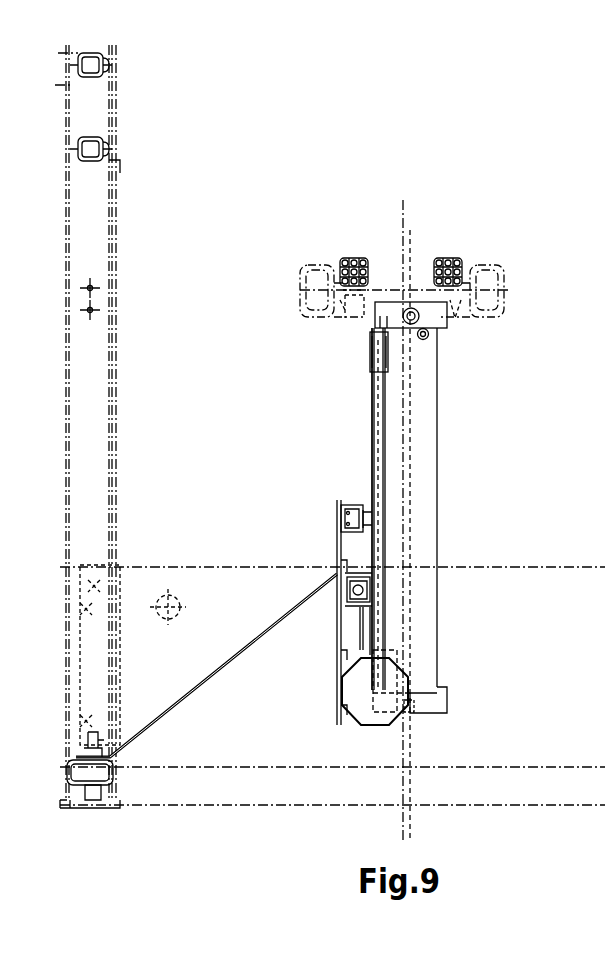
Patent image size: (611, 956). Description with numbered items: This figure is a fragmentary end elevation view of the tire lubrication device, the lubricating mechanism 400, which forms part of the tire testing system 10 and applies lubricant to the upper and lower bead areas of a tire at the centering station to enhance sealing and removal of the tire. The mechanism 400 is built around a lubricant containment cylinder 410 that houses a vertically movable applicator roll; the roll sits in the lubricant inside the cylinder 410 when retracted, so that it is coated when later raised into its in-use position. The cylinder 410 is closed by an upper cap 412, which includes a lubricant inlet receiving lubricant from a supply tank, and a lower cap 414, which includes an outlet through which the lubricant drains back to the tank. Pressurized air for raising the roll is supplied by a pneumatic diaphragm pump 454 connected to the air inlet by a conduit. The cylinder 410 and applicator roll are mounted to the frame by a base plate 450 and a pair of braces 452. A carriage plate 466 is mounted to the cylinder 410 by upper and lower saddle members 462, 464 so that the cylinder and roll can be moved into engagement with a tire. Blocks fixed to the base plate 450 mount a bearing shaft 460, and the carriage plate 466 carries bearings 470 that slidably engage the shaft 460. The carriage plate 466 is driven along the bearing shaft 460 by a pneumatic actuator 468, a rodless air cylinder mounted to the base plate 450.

The section line 10 is at (570, 217).
The lubricating mechanism 400 is at (315, 218).
The lubricant containment cylinder 410 is at (438, 395).
The upper cap 412 is at (437, 315).
The lower cap 414 is at (445, 700).
The base plate 450 is at (340, 525).
The braces 452 is at (220, 662).
The pneumatic diaphragm pump 454 is at (363, 705).
The bearing shaft 460 is at (350, 592).
The upper saddle member 462 is at (369, 332).
The stop 464 is at (410, 712).
The carriage plate 466 is at (372, 412).
The pneumatic actuator 468 is at (353, 492).
The bearings 470 is at (363, 608).